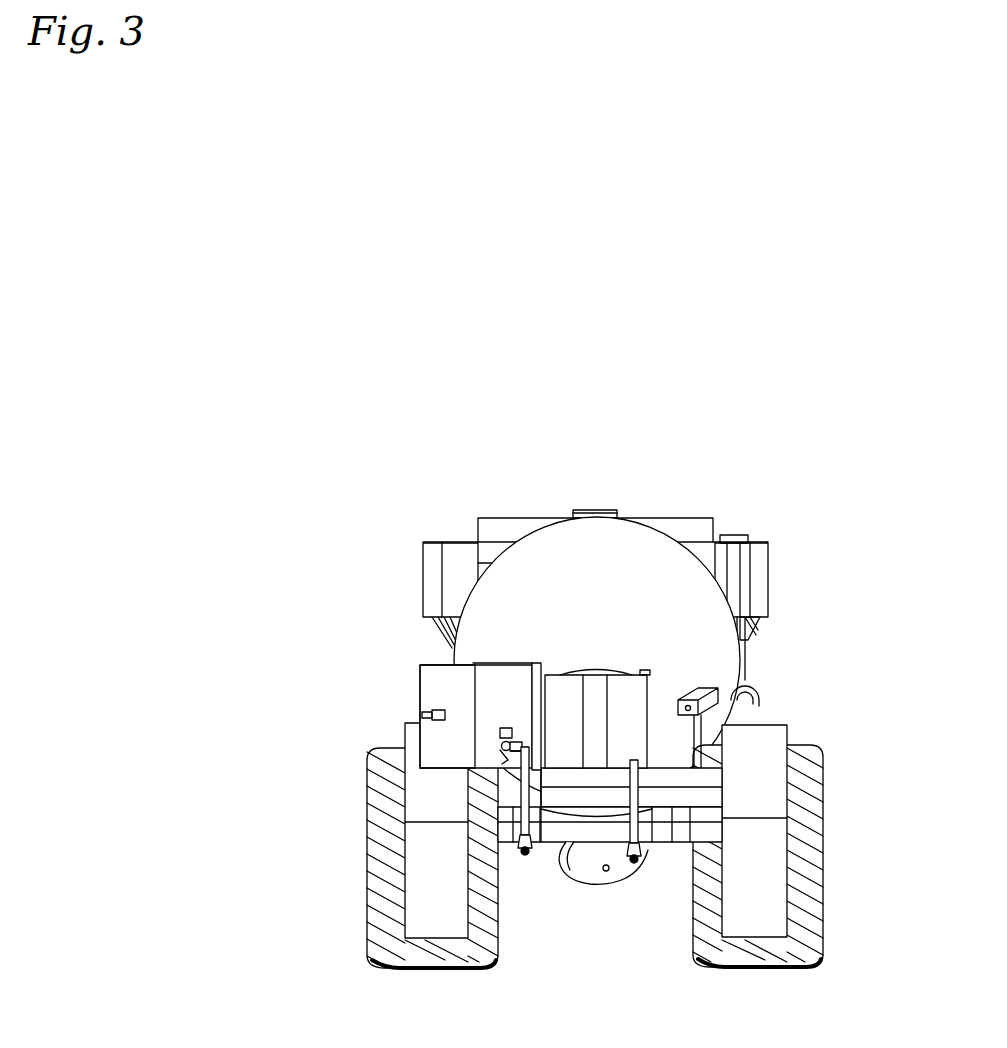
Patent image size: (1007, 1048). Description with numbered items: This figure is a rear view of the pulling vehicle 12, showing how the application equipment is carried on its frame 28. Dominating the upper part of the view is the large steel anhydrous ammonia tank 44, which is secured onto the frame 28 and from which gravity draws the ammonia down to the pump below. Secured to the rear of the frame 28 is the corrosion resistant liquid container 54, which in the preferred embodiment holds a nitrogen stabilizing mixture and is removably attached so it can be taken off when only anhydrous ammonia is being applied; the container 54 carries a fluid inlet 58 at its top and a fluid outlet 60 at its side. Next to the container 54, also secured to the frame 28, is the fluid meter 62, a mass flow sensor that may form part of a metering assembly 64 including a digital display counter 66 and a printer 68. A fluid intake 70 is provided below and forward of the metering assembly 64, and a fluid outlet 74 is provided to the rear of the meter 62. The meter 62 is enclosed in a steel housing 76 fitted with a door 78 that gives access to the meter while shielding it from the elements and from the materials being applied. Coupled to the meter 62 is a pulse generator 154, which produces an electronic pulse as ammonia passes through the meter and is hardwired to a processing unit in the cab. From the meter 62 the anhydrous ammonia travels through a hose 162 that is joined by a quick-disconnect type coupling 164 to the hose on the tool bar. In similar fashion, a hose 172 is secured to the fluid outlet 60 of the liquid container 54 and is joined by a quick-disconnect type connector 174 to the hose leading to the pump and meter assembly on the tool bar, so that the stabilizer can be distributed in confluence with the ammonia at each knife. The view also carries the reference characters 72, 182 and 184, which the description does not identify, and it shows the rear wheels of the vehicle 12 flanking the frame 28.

The pulling vehicle 12 is at (763, 468).
The frame 28 is at (668, 842).
The anhydrous ammonia tank 44 is at (649, 569).
The liquid container 54 is at (647, 697).
The fluid inlet 58 is at (637, 670).
The fluid outlet 60 is at (638, 760).
The fluid meter 62 is at (506, 688).
The metering assembly 64 is at (506, 760).
The digital display counter 66 is at (502, 756).
The printer 68 is at (506, 743).
The fluid intake 70 is at (498, 745).
The conduit 72 is at (541, 748).
The fluid outlet 74 is at (522, 760).
The housing 76 is at (532, 715).
The door 78 is at (451, 667).
The pulse generator 154 is at (505, 733).
The hose 162 is at (536, 838).
The quick-disconnect type coupling 164 is at (525, 857).
The hose 172 is at (636, 860).
The quick-disconnect type connector 174 is at (636, 862).
The hitch assembly 182 is at (797, 690).
The hitch ring 184 is at (738, 708).